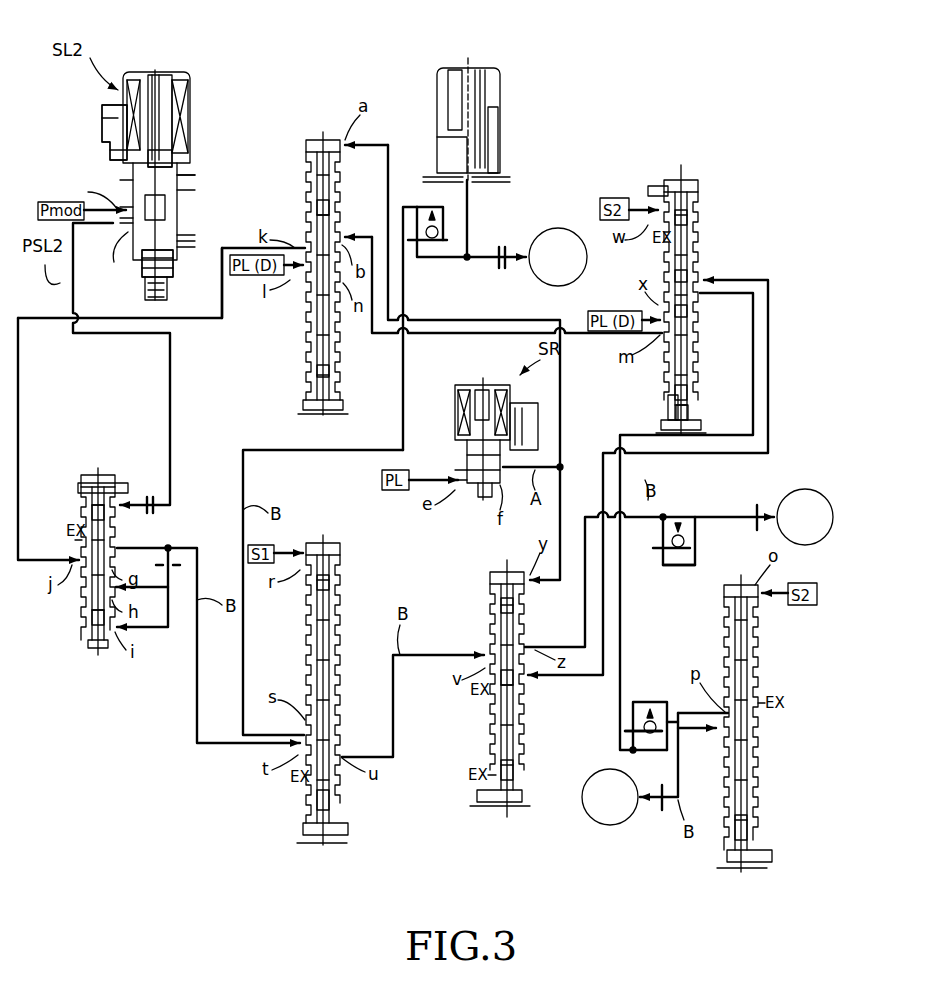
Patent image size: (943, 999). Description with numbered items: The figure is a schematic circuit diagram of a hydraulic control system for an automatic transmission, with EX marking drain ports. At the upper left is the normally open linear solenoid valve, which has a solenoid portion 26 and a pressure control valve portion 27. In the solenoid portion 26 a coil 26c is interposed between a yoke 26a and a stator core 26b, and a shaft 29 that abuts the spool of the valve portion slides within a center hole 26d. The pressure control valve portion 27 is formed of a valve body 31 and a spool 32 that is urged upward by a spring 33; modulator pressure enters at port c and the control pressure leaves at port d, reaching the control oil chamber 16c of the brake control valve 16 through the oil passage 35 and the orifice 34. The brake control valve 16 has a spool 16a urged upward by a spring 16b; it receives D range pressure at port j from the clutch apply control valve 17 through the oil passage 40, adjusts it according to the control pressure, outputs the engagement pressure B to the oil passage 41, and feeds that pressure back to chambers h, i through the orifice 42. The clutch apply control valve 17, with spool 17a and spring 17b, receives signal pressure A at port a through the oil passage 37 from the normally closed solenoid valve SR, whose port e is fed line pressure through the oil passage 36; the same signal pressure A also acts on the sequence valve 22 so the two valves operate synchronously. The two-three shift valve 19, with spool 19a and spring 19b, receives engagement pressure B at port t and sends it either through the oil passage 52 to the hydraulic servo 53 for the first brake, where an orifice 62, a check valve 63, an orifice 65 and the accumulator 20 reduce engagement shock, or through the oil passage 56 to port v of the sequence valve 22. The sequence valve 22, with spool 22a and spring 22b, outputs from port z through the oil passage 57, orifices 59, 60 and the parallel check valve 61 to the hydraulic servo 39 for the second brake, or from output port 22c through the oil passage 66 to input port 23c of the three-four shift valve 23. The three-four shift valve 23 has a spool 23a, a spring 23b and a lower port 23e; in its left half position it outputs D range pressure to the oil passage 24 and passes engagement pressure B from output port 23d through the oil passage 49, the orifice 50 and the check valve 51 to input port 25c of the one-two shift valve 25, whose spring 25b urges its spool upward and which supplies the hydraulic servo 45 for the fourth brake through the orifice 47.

The brake control valve 16 is at (107, 539).
The spool 16a is at (116, 520).
The spring 16b is at (84, 625).
The control oil chamber 16c is at (120, 493).
The clutch apply control valve 17 is at (332, 266).
The spool 17a is at (340, 215).
The spring 17b is at (340, 375).
The 2-3 shift valve 19 is at (347, 664).
The spool 19a is at (340, 595).
The spring 19b is at (340, 805).
The B-1 accumulator 20 is at (497, 66).
The sequence valve 22 is at (507, 677).
The spool 22a is at (490, 600).
The spring 22b is at (524, 770).
The output port 22c is at (524, 680).
The 3-4 shift valve 23 is at (680, 274).
The spool 23a is at (698, 225).
The spring 23b is at (698, 400).
The input port 23c is at (705, 268).
The output port 23d is at (698, 300).
The lower port 23e is at (664, 412).
The oil passage 24 is at (420, 345).
The 1-2 shift valve 25 is at (770, 723).
The spring 25b is at (758, 838).
The input port 25c is at (705, 735).
The solenoid portion 26 is at (170, 155).
The yoke 26a is at (195, 94).
The stator core 26b is at (190, 115).
The coil 26c is at (188, 150).
The center hole 26d is at (160, 72).
The pressure control valve portion 27 is at (195, 186).
The shaft 29 is at (172, 125).
The valve body 31 is at (120, 180).
The spool 32 is at (165, 207).
The spring 33 is at (173, 262).
The orifice 34 is at (150, 497).
The oil passage 35 is at (108, 335).
The oil passage 36 is at (460, 455).
The oil passage 37 is at (565, 445).
The hydraulic servo 39 is at (805, 489).
The oil passage 40 is at (200, 322).
The oil passage 41 is at (215, 748).
The orifice 42 is at (172, 568).
The hydraulic servo 45 is at (610, 825).
The orifice 47 is at (662, 812).
The oil passage 49 is at (715, 405).
The orifice 50 is at (630, 705).
The check valve 51 is at (655, 740).
The oil passage 52 is at (290, 455).
The hydraulic servo 53 is at (558, 228).
The oil passage 56 is at (393, 720).
The oil passage 57 is at (585, 610).
The orifice 59 is at (665, 565).
The orifice 60 is at (757, 500).
The check valve 61 is at (680, 530).
The orifice 62 is at (420, 260).
The check valve 63 is at (438, 225).
The orifice 65 is at (503, 245).
The oil passage 66 is at (768, 345).